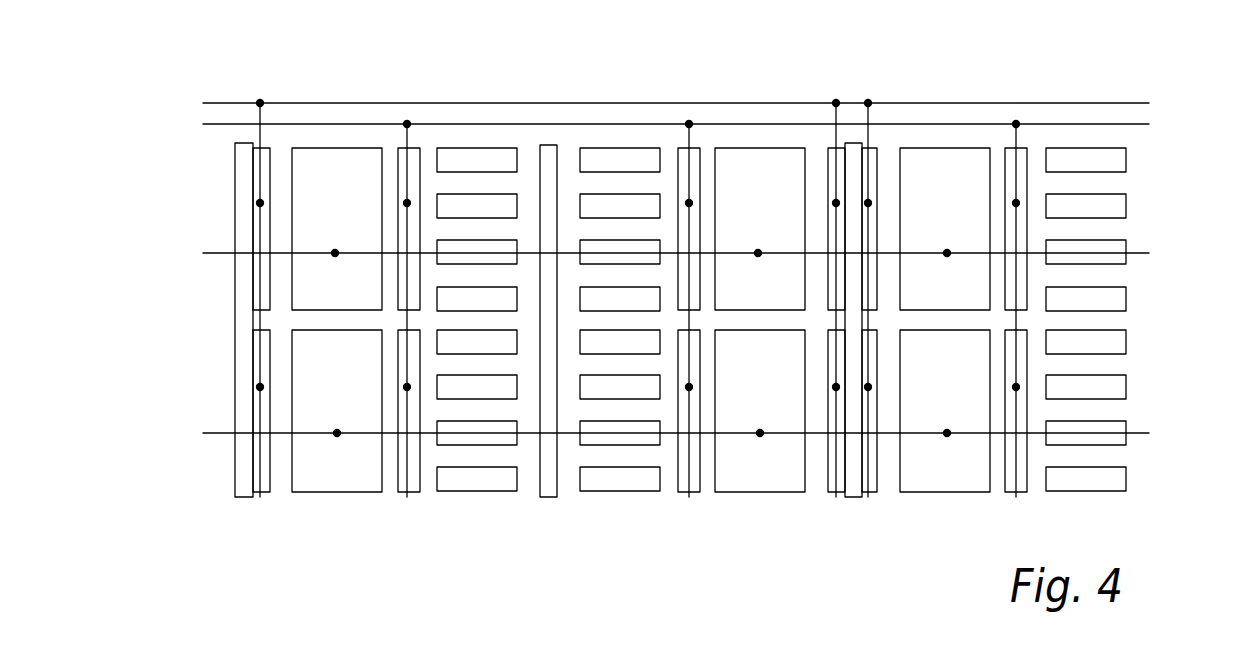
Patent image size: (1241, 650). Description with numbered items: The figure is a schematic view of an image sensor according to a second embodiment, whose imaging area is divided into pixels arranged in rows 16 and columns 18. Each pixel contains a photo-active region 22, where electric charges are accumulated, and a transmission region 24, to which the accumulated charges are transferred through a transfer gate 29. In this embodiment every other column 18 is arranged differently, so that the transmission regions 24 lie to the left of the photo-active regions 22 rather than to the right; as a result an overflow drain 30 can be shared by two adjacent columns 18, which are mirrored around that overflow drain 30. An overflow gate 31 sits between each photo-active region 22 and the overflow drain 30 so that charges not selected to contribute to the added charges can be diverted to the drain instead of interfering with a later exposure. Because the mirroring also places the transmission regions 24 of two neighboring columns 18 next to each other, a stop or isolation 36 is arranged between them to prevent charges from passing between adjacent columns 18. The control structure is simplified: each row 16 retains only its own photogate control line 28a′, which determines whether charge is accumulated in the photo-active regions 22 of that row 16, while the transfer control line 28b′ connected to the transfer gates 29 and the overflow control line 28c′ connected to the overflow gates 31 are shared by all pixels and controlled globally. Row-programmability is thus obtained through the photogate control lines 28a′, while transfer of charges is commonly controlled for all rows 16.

The row 16 is at (168, 216).
The column 18 is at (378, 88).
The photo-active region 22 is at (332, 160).
The transmission region 24 is at (508, 153).
The photogate control line 28a′ is at (1150, 253).
The transfer control line 28b′ is at (1150, 125).
The overflow control line 28c′ is at (1150, 103).
The transfer gate 29 is at (417, 147).
The overflow drain 30 is at (243, 143).
The overflow gate 31 is at (265, 147).
The stop 36 is at (550, 152).